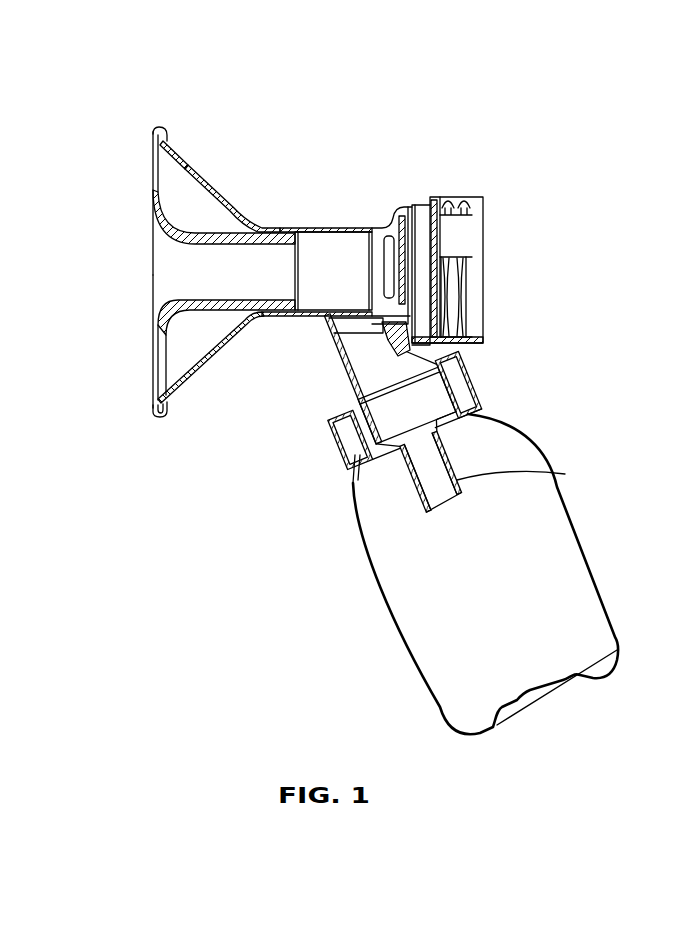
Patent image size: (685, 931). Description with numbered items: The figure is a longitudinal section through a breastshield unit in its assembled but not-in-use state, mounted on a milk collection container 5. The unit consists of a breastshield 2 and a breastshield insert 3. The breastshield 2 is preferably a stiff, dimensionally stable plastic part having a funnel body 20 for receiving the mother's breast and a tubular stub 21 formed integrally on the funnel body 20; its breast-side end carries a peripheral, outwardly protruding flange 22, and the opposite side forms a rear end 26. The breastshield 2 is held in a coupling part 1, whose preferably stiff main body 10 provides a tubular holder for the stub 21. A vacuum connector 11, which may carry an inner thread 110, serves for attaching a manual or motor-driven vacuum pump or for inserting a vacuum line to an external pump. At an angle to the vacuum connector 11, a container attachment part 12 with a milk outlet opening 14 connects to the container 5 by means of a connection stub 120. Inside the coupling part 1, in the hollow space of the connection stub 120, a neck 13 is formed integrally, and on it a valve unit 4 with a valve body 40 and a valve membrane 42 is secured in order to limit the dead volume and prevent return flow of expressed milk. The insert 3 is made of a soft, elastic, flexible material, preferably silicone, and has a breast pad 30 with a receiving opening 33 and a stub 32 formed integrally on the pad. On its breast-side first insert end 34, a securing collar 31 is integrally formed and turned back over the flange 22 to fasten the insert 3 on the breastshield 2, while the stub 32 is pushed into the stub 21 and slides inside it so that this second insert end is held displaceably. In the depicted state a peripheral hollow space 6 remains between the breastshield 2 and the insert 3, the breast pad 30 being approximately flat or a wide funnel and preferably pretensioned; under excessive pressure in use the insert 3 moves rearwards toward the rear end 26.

The coupling part 1 is at (428, 182).
The breastshield 2 is at (270, 216).
The breastshield insert 3 is at (148, 246).
The valve unit 4 is at (455, 457).
The milk collection container 5 is at (575, 523).
The peripheral hollow space 6 is at (186, 213).
The main body 10 is at (380, 223).
The vacuum connector 11 is at (480, 197).
The container attachment part 12 is at (352, 377).
The neck 13 is at (382, 413).
The milk outlet opening 14 is at (346, 326).
The funnel body 20 is at (260, 220).
The tubular stub 21 is at (330, 227).
The flange 22 is at (170, 134).
The rear end 26 is at (388, 236).
The breast pad 30 is at (153, 182).
The securing collar 31 is at (158, 126).
The stub 32 is at (253, 318).
The receiving opening 33 is at (182, 273).
The first insert end 34 is at (153, 306).
The valve body 40 is at (563, 474).
The valve membrane 42 is at (411, 483).
The inner thread 110 is at (466, 293).
The connection stub 120 is at (478, 376).